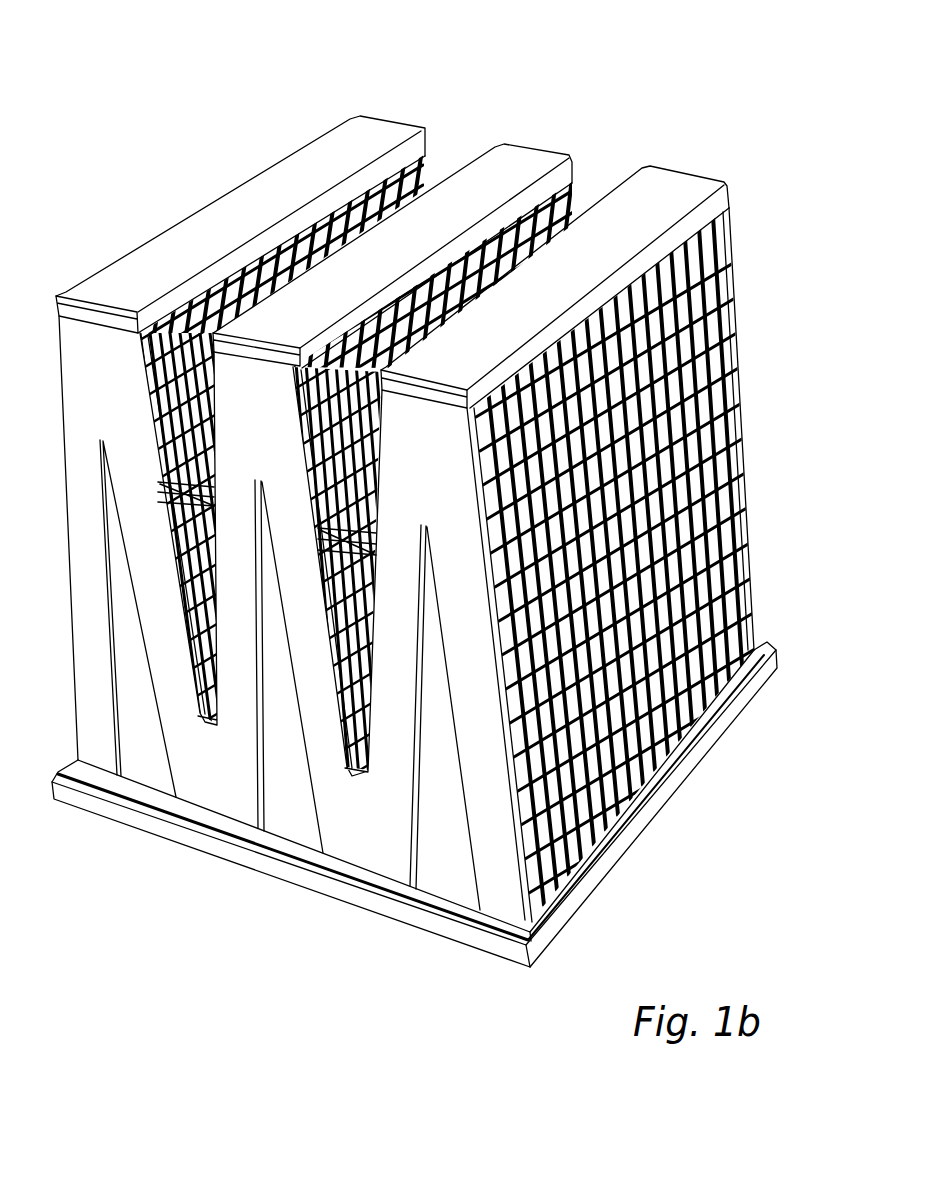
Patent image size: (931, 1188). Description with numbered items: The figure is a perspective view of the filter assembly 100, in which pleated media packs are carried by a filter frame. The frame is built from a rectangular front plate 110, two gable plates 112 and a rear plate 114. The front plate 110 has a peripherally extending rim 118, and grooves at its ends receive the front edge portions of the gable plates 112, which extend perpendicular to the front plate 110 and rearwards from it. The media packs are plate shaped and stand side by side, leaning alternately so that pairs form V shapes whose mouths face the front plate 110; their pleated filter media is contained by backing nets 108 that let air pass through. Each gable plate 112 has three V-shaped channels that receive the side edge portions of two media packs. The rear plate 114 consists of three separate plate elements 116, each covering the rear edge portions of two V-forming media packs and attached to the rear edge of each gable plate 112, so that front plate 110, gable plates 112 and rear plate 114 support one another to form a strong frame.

The filter assembly 100 is at (190, 111).
The backing nets 108 is at (573, 180).
The front plate 110 is at (616, 862).
The gable plates 112 is at (372, 832).
The rear plate 114 is at (389, 105).
The plate elements 116 is at (398, 117).
The rim 118 is at (405, 888).